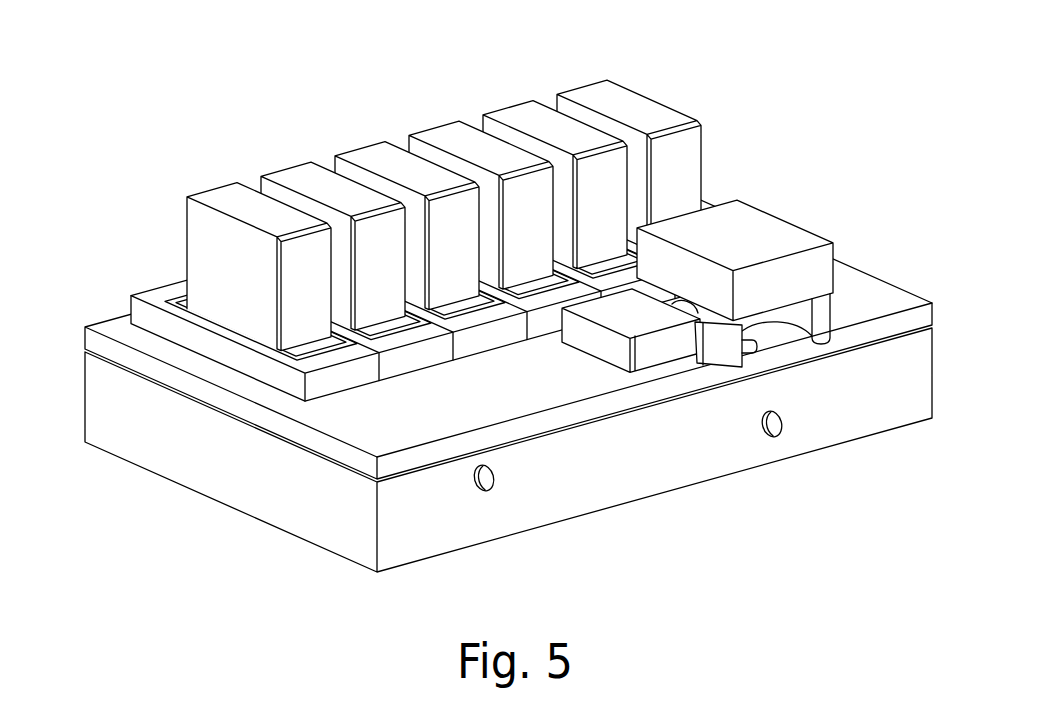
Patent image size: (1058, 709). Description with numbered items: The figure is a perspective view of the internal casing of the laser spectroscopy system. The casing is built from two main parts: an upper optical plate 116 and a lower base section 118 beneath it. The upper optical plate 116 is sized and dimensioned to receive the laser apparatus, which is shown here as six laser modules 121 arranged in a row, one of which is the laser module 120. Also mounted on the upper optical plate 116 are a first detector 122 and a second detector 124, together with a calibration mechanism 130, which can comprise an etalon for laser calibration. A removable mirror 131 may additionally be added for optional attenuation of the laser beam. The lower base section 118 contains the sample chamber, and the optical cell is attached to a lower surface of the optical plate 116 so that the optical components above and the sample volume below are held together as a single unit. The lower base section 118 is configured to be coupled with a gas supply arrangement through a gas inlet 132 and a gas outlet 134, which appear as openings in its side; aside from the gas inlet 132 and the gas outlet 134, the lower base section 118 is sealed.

The upper optical plate 116 is at (150, 282).
The lower base section 118 is at (193, 503).
The laser module 120 is at (172, 200).
The laser modules 121 is at (315, 113).
The first detector 122 is at (792, 210).
The second detector 124 is at (677, 385).
The calibration mechanism 130 is at (523, 398).
The removable mirror 131 is at (392, 438).
The gas inlet 132 is at (776, 440).
The gas outlet 134 is at (480, 500).